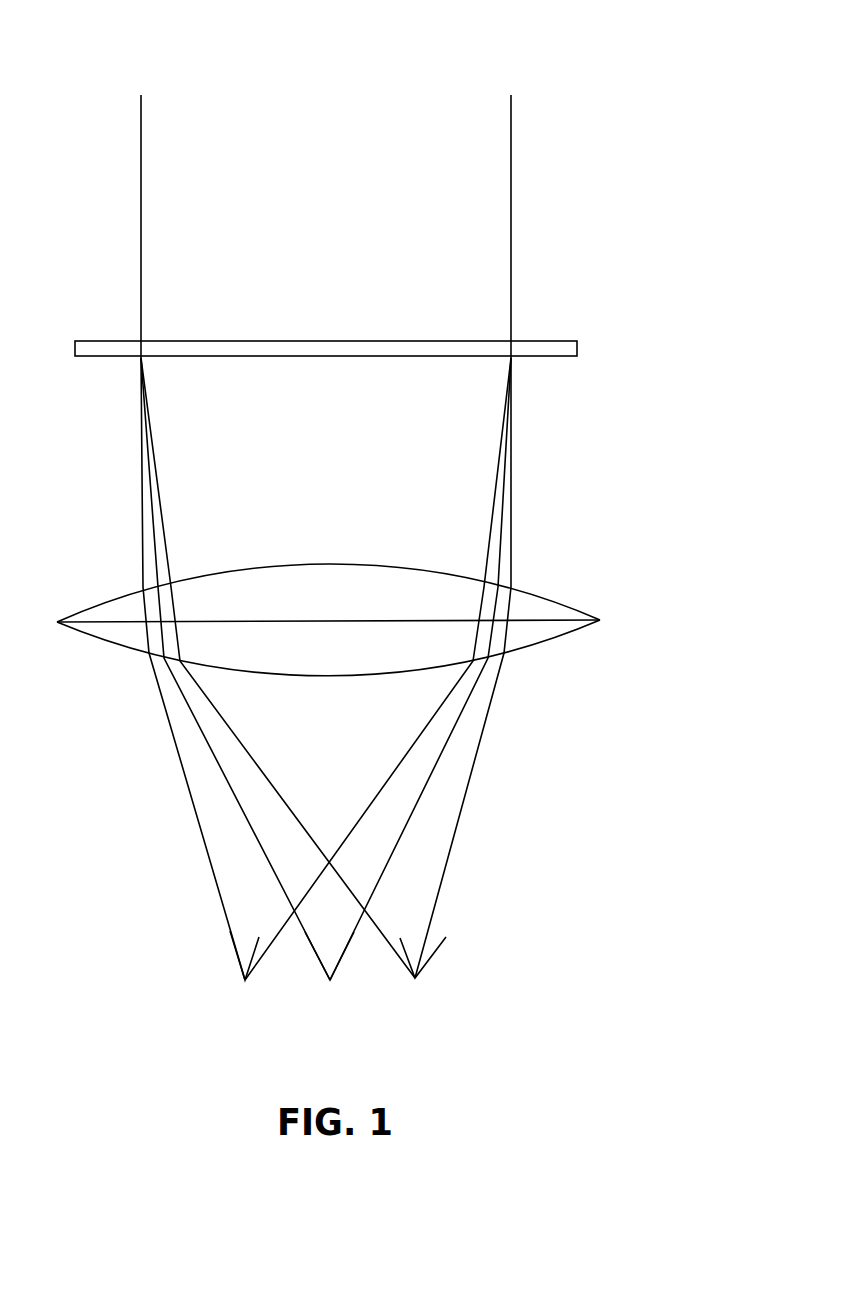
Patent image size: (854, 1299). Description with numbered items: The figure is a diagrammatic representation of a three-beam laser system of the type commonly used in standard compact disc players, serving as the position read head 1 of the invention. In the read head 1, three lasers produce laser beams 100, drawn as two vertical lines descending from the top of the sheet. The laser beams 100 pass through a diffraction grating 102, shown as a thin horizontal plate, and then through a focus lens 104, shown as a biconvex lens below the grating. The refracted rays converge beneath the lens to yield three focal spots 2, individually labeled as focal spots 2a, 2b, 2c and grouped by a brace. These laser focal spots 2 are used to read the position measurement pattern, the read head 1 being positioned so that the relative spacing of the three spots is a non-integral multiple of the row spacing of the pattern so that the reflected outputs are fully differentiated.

The position read head 1 is at (443, 74).
The laser beams 100 is at (511, 197).
The diffraction grating 102 is at (577, 347).
The focus lens 104 is at (568, 632).
The laser focal spots 2 is at (333, 1002).
The first focal spot 2a is at (244, 976).
The second focal spot 2b is at (329, 976).
The third focal spot 2c is at (423, 979).